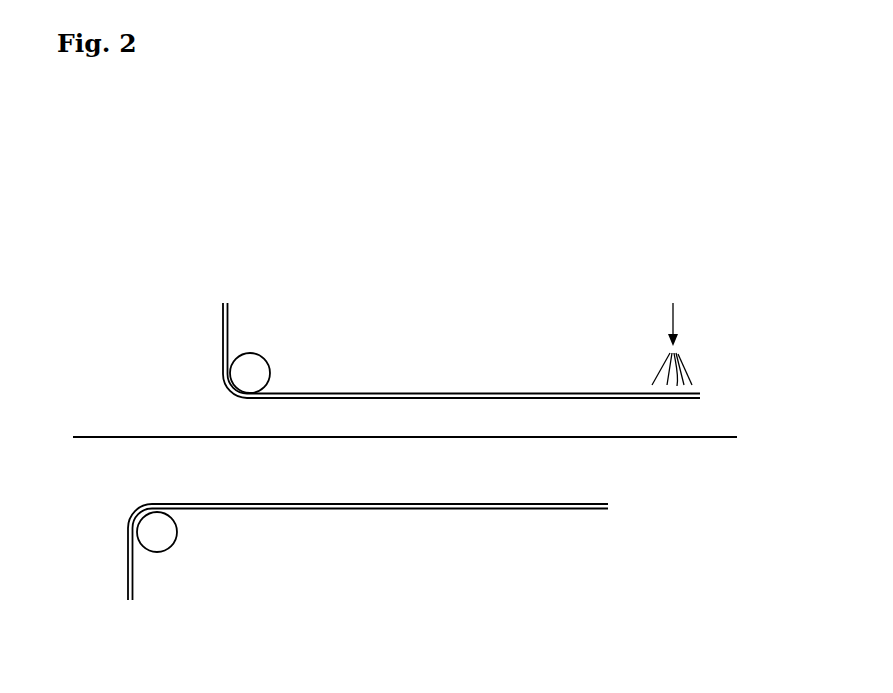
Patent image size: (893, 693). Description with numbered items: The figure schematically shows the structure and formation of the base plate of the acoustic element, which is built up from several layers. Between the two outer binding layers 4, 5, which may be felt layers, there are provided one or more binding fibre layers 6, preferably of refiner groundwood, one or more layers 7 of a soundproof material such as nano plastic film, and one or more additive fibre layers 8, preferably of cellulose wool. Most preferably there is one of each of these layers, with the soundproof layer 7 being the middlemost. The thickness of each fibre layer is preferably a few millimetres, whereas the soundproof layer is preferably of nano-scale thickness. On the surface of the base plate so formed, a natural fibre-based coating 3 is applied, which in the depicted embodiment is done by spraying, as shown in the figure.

The natural fibre-based coating 3 is at (680, 350).
The binding layer 4 is at (205, 320).
The binding layer 5 is at (96, 544).
The binding fibre layer 6 is at (290, 470).
The soundproof material layer 7 is at (612, 440).
The additive fibre layer 8 is at (242, 411).